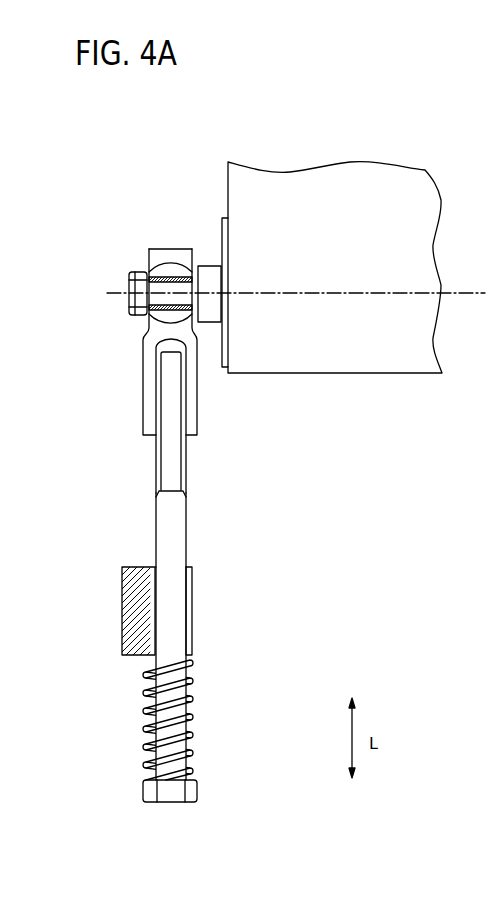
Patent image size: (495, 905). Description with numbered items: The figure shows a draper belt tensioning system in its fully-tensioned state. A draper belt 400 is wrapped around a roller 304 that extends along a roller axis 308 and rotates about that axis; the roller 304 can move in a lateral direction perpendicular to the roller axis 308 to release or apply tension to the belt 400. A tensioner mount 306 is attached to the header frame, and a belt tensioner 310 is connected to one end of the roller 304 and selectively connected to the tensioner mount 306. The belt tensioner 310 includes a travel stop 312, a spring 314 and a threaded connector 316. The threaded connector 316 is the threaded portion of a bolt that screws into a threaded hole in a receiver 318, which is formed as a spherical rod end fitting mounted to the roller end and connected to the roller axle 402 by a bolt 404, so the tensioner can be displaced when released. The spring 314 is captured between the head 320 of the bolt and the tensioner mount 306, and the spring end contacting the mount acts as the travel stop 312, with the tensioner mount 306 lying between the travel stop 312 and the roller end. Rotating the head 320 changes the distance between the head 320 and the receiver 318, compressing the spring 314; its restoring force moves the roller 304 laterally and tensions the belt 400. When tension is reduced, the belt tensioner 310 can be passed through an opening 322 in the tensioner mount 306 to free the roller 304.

The draper belt 400 is at (303, 186).
The roller 304 is at (222, 232).
The roller axis 308 is at (466, 287).
The roller axle 402 is at (211, 264).
The bolt 404 is at (135, 272).
The receiver 318 is at (190, 398).
The threaded connector 316 is at (183, 452).
The belt tensioner 310 is at (192, 503).
The travel stop 312 is at (192, 630).
The tensioner mount 306 is at (122, 608).
The opening 322 is at (192, 595).
The spring 314 is at (148, 717).
The head 320 is at (200, 792).